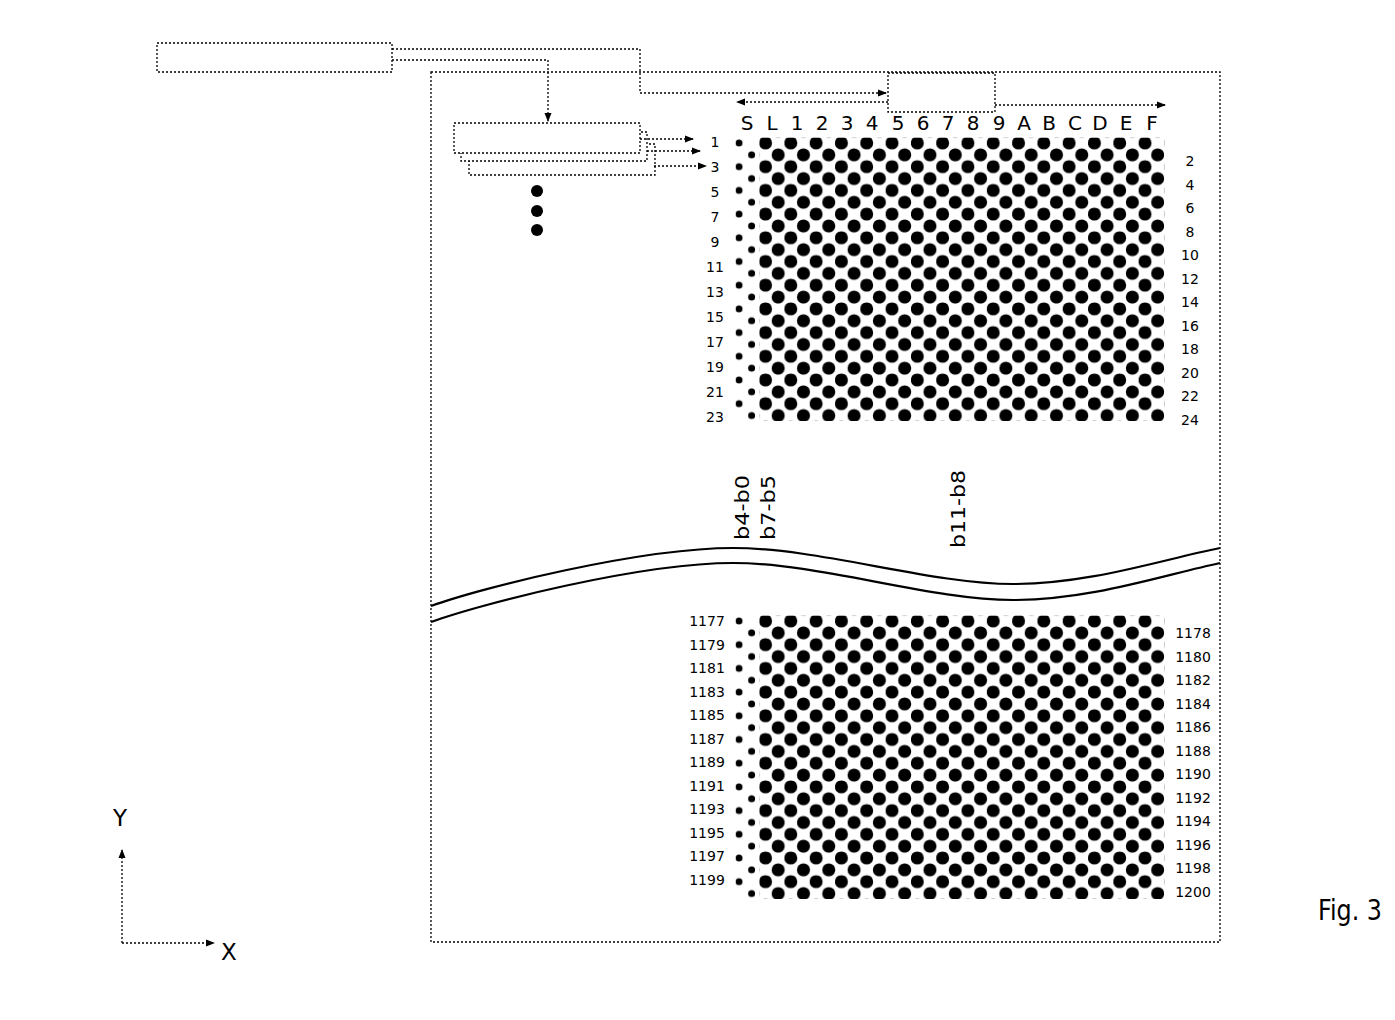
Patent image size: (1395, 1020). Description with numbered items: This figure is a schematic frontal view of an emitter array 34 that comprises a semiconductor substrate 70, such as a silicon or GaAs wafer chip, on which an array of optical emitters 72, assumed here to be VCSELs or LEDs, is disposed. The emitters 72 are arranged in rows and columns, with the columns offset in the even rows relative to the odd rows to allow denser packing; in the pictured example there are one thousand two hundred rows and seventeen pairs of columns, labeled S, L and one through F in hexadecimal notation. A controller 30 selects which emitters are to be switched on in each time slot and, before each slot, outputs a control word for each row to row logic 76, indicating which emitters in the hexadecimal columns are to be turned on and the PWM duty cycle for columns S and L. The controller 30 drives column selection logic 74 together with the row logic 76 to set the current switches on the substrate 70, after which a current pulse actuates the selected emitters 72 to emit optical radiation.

The controller 30 is at (157, 55).
The emitter array 34 is at (133, 135).
The semiconductor substrate 70 is at (1219, 139).
The optical emitters 72 is at (1150, 308).
The column selection logic 74 is at (888, 80).
The row logic 76 is at (469, 170).